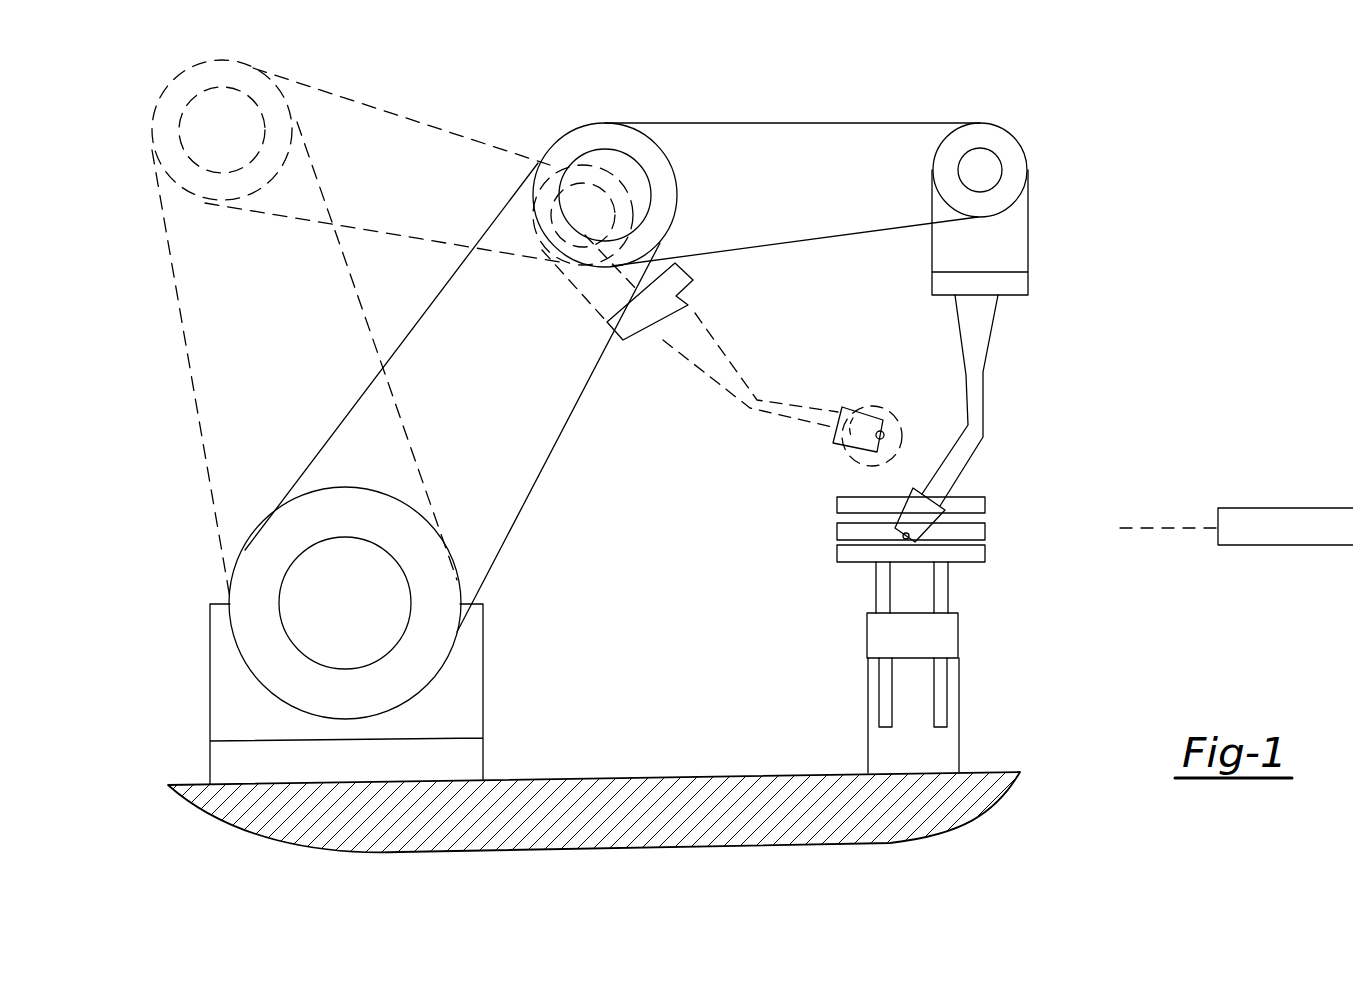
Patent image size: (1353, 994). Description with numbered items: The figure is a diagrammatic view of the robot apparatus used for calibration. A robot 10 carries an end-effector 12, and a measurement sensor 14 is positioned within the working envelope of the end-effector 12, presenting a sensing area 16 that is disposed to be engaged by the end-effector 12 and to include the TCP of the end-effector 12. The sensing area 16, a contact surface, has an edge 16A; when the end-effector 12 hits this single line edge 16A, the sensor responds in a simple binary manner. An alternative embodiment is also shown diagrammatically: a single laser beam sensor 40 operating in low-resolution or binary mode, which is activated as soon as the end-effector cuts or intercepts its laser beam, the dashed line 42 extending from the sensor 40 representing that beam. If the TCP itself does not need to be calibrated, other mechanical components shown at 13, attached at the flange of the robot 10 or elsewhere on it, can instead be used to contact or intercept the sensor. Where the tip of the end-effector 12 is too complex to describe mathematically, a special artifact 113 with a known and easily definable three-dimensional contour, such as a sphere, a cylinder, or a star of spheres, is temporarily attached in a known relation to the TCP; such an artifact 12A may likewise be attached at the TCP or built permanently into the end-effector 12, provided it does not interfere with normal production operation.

The robot 10 is at (490, 228).
The mechanical component 13 is at (700, 328).
The artifact 113 is at (860, 455).
The end-effector 12 is at (980, 333).
The artifact 12A is at (953, 538).
The tool center point TCP is at (905, 522).
The sensing area 16 is at (850, 545).
The edge 16A is at (985, 553).
The measurement sensor 14 is at (958, 645).
The laser beam sensor 40 is at (1302, 508).
The connection line 42 is at (1185, 527).